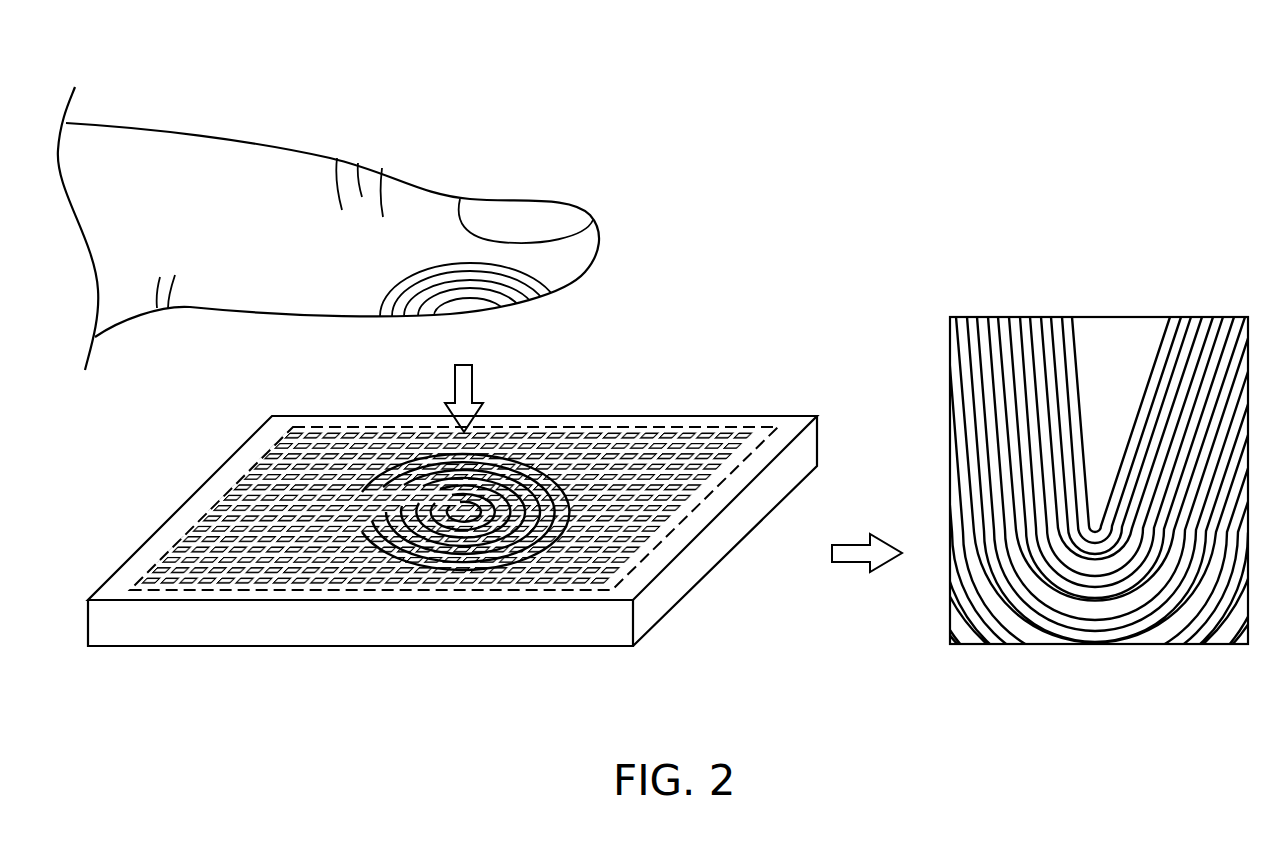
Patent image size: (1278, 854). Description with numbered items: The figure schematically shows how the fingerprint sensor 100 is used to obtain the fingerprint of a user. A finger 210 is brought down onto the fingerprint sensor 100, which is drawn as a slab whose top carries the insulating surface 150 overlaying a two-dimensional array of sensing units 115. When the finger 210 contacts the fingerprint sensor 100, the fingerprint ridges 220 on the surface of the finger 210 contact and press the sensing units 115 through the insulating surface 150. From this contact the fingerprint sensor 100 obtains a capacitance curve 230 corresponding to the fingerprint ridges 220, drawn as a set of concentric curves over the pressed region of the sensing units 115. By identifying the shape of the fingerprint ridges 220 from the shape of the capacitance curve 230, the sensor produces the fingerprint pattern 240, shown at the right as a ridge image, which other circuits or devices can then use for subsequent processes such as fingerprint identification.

The fingerprint sensor 100 is at (786, 416).
The sensing unit 115 is at (157, 577).
The insulating surface 150 is at (660, 427).
The finger 210 is at (602, 198).
The fingerprint ridges 220 is at (506, 294).
The capacitance curve 230 is at (445, 513).
The fingerprint pattern 240 is at (1096, 301).